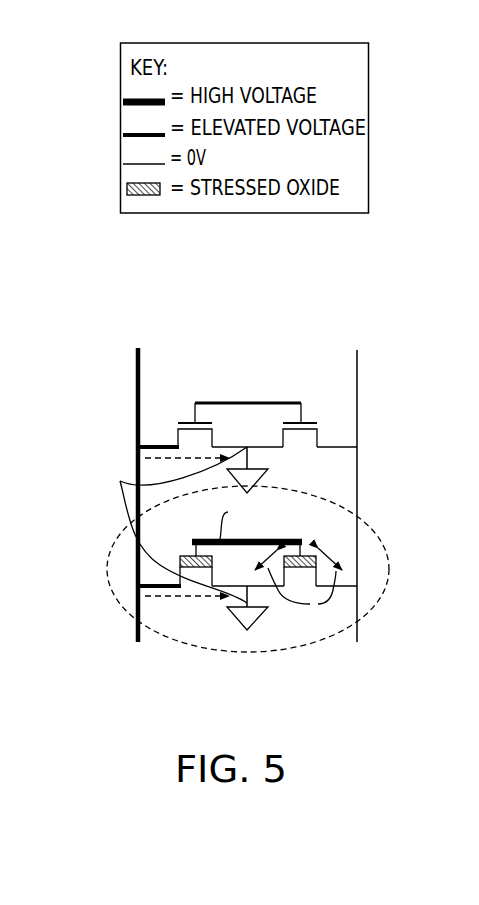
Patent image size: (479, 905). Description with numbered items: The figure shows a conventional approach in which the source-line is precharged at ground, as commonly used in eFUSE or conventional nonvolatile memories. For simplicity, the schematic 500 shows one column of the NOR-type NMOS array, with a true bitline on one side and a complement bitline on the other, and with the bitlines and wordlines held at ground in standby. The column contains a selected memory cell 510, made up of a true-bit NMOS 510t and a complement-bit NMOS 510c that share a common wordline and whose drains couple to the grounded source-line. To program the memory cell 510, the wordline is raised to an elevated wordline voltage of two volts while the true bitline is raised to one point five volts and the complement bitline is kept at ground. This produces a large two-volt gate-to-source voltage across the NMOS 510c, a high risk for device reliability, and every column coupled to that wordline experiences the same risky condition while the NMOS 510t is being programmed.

The schematic 500 is at (324, 325).
The memory cell 510 is at (368, 523).
The NMOS for true bit 510t is at (182, 556).
The NMOS for complement bit 510c is at (306, 556).